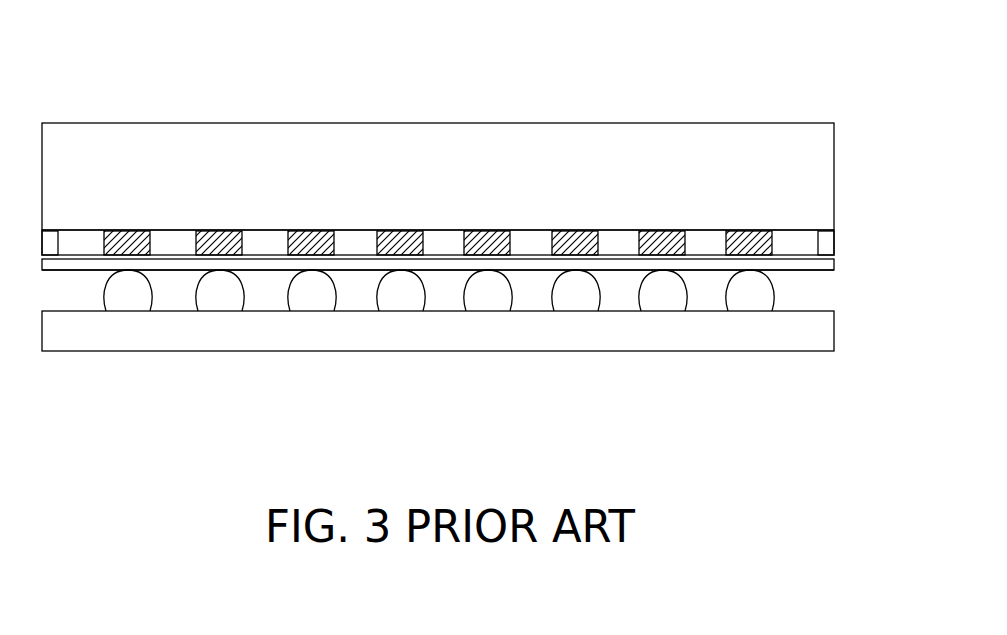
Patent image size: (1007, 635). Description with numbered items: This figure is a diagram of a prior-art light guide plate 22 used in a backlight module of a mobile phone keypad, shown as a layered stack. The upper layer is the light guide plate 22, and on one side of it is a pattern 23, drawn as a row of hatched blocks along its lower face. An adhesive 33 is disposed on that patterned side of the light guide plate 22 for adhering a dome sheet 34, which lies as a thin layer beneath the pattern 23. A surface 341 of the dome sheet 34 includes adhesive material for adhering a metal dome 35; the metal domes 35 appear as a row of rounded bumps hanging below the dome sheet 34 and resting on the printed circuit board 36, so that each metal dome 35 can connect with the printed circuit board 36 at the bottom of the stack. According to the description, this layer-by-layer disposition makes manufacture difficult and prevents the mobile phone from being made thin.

The light guide plate 22 is at (783, 163).
The pattern 23 is at (128, 243).
The adhesive 33 is at (827, 239).
The dome sheet 34 is at (67, 260).
The surface of the dome sheet 341 is at (173, 270).
The metal dome 35 is at (672, 293).
The printed circuit board 36 is at (788, 328).